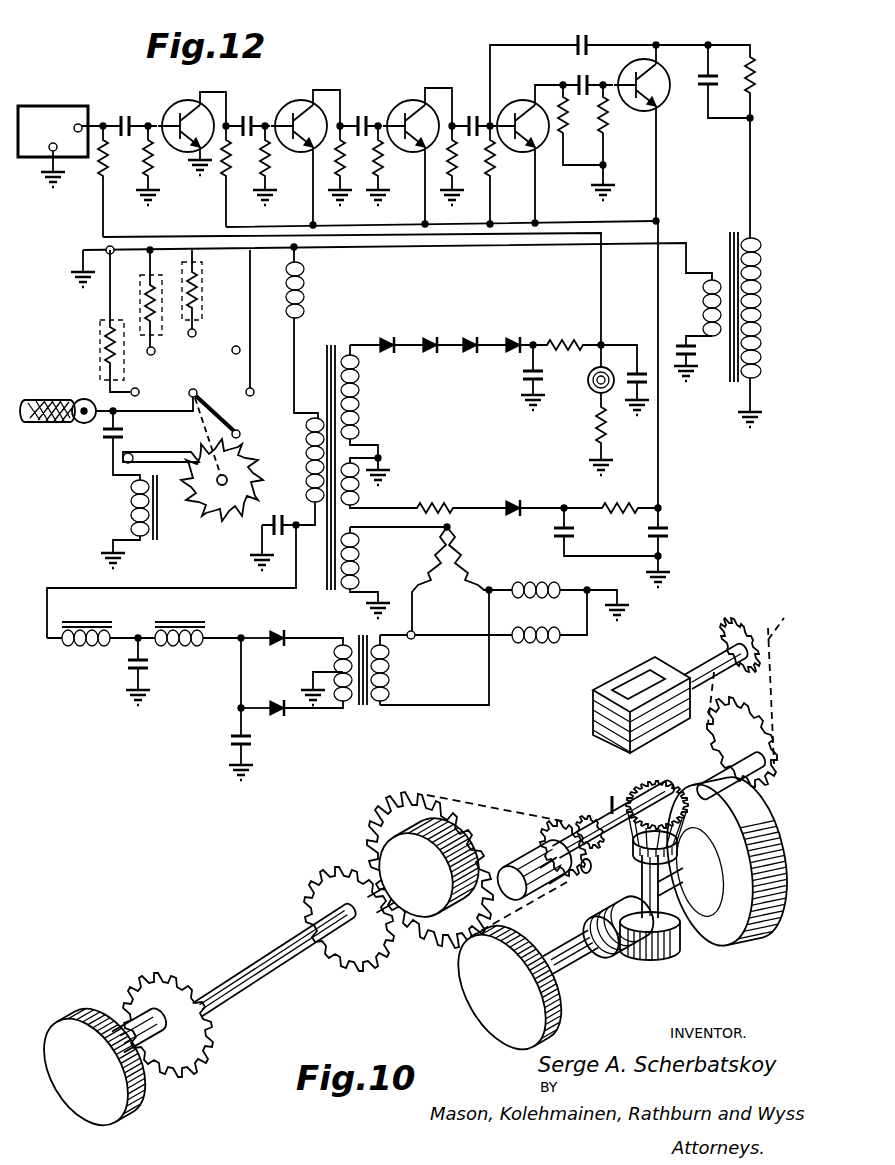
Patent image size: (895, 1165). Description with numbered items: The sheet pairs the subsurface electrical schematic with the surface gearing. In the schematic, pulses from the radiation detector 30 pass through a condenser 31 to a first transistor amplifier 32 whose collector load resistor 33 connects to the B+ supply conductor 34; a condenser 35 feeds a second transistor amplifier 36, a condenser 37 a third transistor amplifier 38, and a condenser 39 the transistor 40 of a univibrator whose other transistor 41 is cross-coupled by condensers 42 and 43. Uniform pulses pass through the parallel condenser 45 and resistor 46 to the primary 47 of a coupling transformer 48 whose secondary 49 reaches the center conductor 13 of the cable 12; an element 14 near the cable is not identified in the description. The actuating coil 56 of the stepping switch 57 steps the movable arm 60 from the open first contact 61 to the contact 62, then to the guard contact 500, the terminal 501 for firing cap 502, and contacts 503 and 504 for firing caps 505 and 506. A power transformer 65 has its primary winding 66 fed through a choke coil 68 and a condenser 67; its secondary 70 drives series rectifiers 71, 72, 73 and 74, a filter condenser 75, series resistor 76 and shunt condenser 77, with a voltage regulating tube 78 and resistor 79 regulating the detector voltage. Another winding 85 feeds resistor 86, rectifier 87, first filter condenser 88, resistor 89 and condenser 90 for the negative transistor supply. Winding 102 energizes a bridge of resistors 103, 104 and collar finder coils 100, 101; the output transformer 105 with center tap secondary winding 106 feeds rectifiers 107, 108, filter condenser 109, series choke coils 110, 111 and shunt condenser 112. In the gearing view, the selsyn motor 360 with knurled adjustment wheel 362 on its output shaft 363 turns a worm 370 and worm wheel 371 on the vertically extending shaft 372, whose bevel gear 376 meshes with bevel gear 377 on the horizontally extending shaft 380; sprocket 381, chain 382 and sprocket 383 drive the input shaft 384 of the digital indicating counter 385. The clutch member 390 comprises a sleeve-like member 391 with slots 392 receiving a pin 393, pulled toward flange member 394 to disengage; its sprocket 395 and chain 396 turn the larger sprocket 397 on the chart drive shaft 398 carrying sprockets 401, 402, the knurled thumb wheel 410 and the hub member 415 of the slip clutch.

In FIG. 12, the cable 12 is at (32, 398).
In FIG. 12, the center conductor 13 is at (88, 400).
In FIG. 12, the microphone housing 14 is at (46, 423).
In FIG. 12, the radiation detector 30 is at (66, 106).
In FIG. 12, the condenser 31 is at (140, 110).
In FIG. 12, the first transistor amplifier 32 is at (196, 102).
In FIG. 12, the load resistor 33 is at (222, 172).
In FIG. 12, the B+ supply conductor 34 is at (226, 217).
In FIG. 12, the condenser 35 is at (255, 118).
In FIG. 12, the second transistor amplifier 36 is at (309, 102).
In FIG. 12, the condenser 37 is at (366, 117).
In FIG. 12, the third transistor amplifier 38 is at (422, 102).
In FIG. 12, the condenser 39 is at (478, 116).
In FIG. 12, the transistor 40 is at (534, 152).
In FIG. 12, the transistor 41 is at (648, 106).
In FIG. 12, the condenser 42 is at (592, 40).
In FIG. 12, the condenser 43 is at (583, 76).
In FIG. 12, the condenser 45 is at (706, 92).
In FIG. 12, the resistor 46 is at (756, 82).
In FIG. 12, the primary 47 is at (758, 272).
In FIG. 12, the coupling transformer 48 is at (728, 223).
In FIG. 12, the secondary 49 is at (694, 308).
In FIG. 12, the actuating coil 56 is at (130, 500).
In FIG. 12, the stepping switch 57 is at (188, 538).
In FIG. 12, the movable arm 60 is at (214, 379).
In FIG. 12, the first contact 61 is at (249, 438).
In FIG. 12, the contact 62 is at (254, 396).
In FIG. 12, the power transformer 65 is at (318, 403).
In FIG. 12, the primary winding 66 is at (305, 450).
In FIG. 12, the condenser 67 is at (288, 506).
In FIG. 12, the choke coil 68 is at (304, 284).
In FIG. 12, the secondary 70 is at (362, 412).
In FIG. 12, the rectifier 71 is at (387, 336).
In FIG. 12, the rectifier 72 is at (426, 336).
In FIG. 12, the rectifier 73 is at (476, 326).
In FIG. 12, the rectifier 74 is at (513, 336).
In FIG. 12, the filter condenser 75 is at (522, 377).
In FIG. 12, the series resistor 76 is at (565, 340).
In FIG. 12, the shunt condenser 77 is at (640, 345).
In FIG. 12, the voltage regulating tube 78 is at (590, 382).
In FIG. 12, the resistor 79 is at (100, 168).
In FIG. 12, the winding 85 is at (362, 488).
In FIG. 12, the resistor 86 is at (432, 502).
In FIG. 12, the rectifier 87 is at (513, 500).
In FIG. 12, the first filter condenser 88 is at (574, 534).
In FIG. 12, the resistor 89 is at (620, 500).
In FIG. 12, the condenser 90 is at (670, 534).
In FIG. 12, the collar finder coil 100 is at (552, 582).
In FIG. 12, the collar finder coil 101 is at (541, 644).
In FIG. 12, the winding 102 is at (362, 557).
In FIG. 12, the resistor 103 is at (436, 574).
In FIG. 12, the resistor 104 is at (470, 574).
In FIG. 12, the output transformer 105 is at (378, 733).
In FIG. 12, the center tap secondary winding 106 is at (336, 668).
In FIG. 12, the rectifier 107 is at (278, 630).
In FIG. 12, the rectifier 108 is at (280, 718).
In FIG. 12, the filter condenser 109 is at (232, 738).
In FIG. 12, the series choke coil 110 is at (180, 645).
In FIG. 12, the series choke coil 111 is at (92, 647).
In FIG. 12, the shunt condenser 112 is at (128, 670).
In FIG. 12, the contact 500 is at (244, 344).
In FIG. 12, the terminal 501 is at (197, 332).
In FIG. 12, the firing cap 502 is at (200, 280).
In FIG. 12, the contact 503 is at (169, 354).
In FIG. 12, the contact 504 is at (150, 383).
In FIG. 12, the firing cap 505 is at (141, 286).
In FIG. 12, the firing cap 506 is at (100, 346).
In FIG. 10, the selsyn motor 360 is at (728, 930).
In FIG. 10, the knurled adjustment wheel 362 is at (472, 1012).
In FIG. 10, the output shaft 363 is at (570, 952).
In FIG. 10, the worm 370 is at (606, 952).
In FIG. 10, the worm wheel 371 is at (680, 954).
In FIG. 10, the vertically extending shaft 372 is at (641, 862).
In FIG. 10, the bevel gear 376 is at (678, 818).
In FIG. 10, the bevel gear 377 is at (648, 790).
In FIG. 10, the horizontally extending shaft 380 is at (708, 782).
In FIG. 10, the sprocket 381 is at (758, 786).
In FIG. 10, the chain 382 is at (755, 691).
In FIG. 10, the sprocket 383 is at (756, 630).
In FIG. 10, the input shaft 384 is at (704, 656).
In FIG. 10, the digital indicating counter 385 is at (594, 714).
In FIG. 10, the clutch member 390 is at (548, 842).
In FIG. 10, the sleeve-like member 391 is at (556, 888).
In FIG. 10, the slots 392 is at (588, 822).
In FIG. 10, the pin 393 is at (616, 790).
In FIG. 10, the flange member 394 is at (516, 872).
In FIG. 10, the sprocket 395 is at (585, 874).
In FIG. 10, the chain 396 is at (476, 790).
In FIG. 10, the larger sprocket 397 is at (378, 812).
In FIG. 10, the chart drive shaft 398 is at (270, 942).
In FIG. 10, the sprocket 401 is at (196, 975).
In FIG. 10, the sprocket 402 is at (346, 972).
In FIG. 10, the knurled thumb wheel 410 is at (76, 1012).
In FIG. 10, the hub member 415 is at (378, 850).